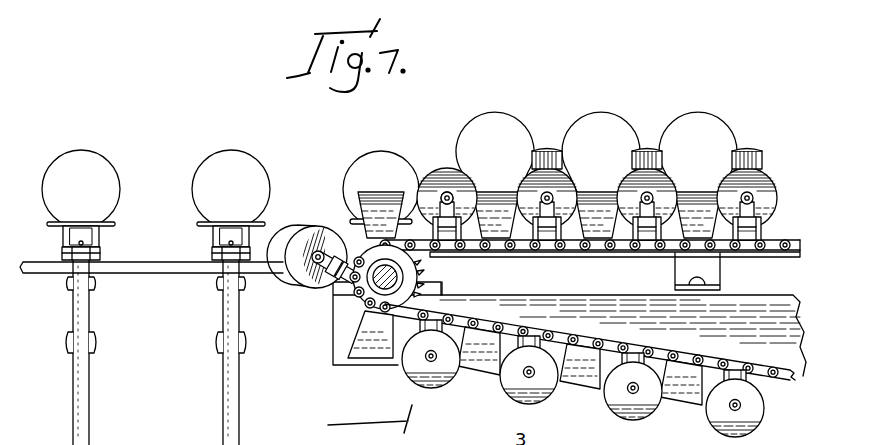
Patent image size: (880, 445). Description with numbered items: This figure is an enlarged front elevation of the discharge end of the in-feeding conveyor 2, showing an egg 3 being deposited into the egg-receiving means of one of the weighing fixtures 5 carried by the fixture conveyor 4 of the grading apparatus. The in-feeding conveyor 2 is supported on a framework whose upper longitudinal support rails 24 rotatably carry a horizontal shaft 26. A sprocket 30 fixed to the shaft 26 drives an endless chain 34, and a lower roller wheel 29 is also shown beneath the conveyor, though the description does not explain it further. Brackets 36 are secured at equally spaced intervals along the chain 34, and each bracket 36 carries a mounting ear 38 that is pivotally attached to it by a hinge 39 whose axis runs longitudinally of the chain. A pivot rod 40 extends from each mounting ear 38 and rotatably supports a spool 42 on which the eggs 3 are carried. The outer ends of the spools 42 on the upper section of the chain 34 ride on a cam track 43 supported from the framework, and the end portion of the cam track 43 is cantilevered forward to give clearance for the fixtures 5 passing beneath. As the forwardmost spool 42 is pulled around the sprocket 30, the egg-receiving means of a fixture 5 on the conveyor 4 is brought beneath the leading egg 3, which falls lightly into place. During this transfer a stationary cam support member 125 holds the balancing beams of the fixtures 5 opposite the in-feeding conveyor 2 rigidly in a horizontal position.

The in-feeding conveyor 2 is at (339, 317).
The egg 3 is at (494, 128).
The fixture conveyor 4 is at (124, 158).
The weighing fixture 5 is at (219, 379).
The upper longitudinal support rail 24 is at (764, 304).
The horizontal shaft 26 is at (379, 288).
The lower roller wheel 29 is at (620, 419).
The sprocket 30 is at (443, 283).
The endless chain 34 is at (597, 251).
The bracket 36 is at (594, 189).
The mounting ear 38 is at (547, 194).
The hinge 39 is at (577, 191).
The pivot rod 40 is at (447, 192).
The spool 42 is at (433, 186).
The cam track 43 is at (778, 205).
The stationary cam support member 125 is at (165, 268).